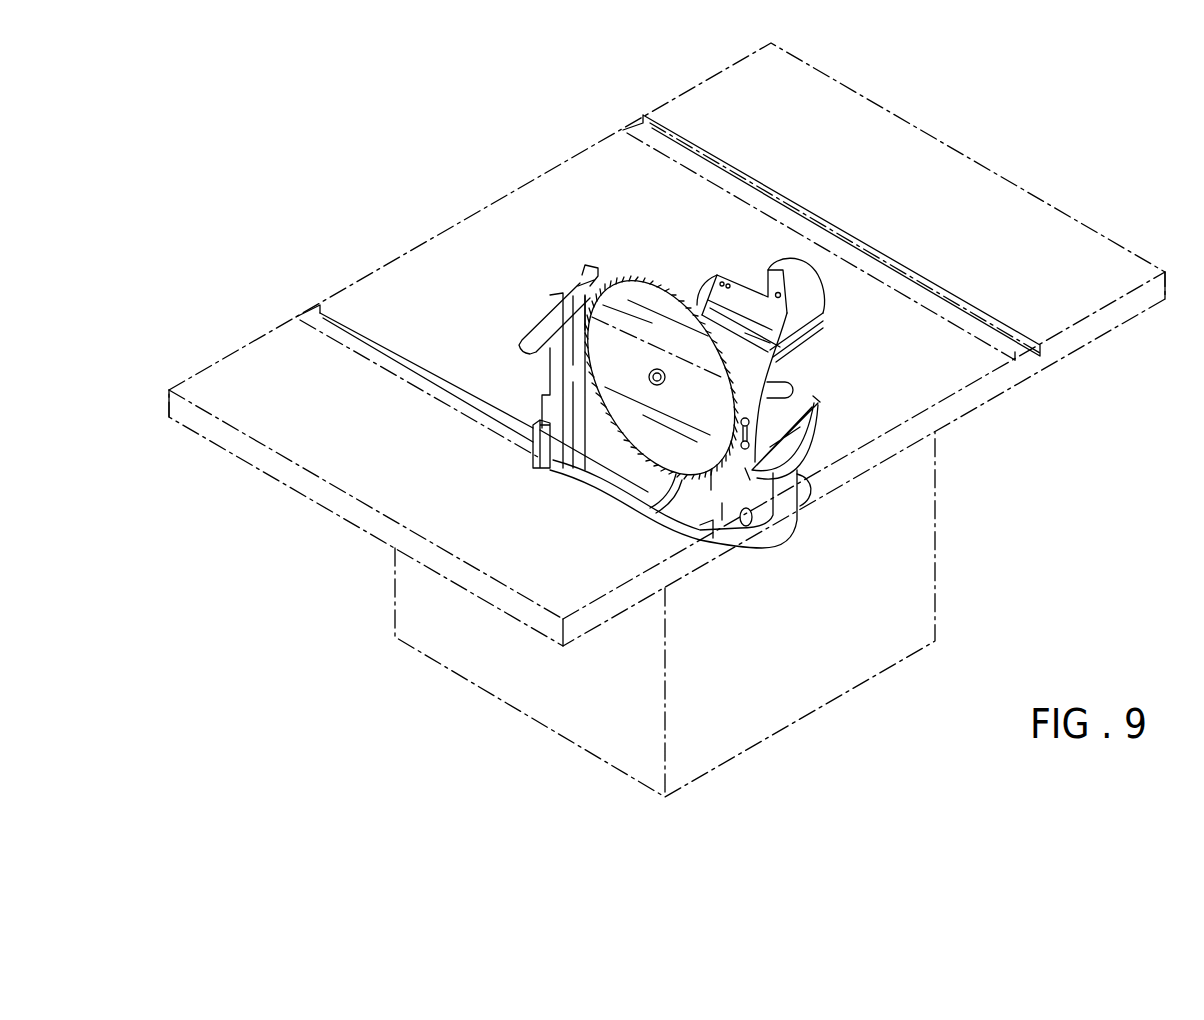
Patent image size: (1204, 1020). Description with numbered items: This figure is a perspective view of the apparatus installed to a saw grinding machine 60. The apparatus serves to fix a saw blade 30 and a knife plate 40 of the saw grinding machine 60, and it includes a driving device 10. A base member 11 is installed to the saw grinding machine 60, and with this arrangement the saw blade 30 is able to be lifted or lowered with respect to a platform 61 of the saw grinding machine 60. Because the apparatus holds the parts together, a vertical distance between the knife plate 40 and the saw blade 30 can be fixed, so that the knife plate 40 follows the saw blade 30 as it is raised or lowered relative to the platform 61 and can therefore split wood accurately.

The driving device 10 is at (583, 332).
The base member 11 is at (612, 440).
The saw blade 30 is at (653, 312).
The knife plate 40 is at (745, 307).
The saw grinding machine 60 is at (918, 505).
The platform 61 is at (942, 378).